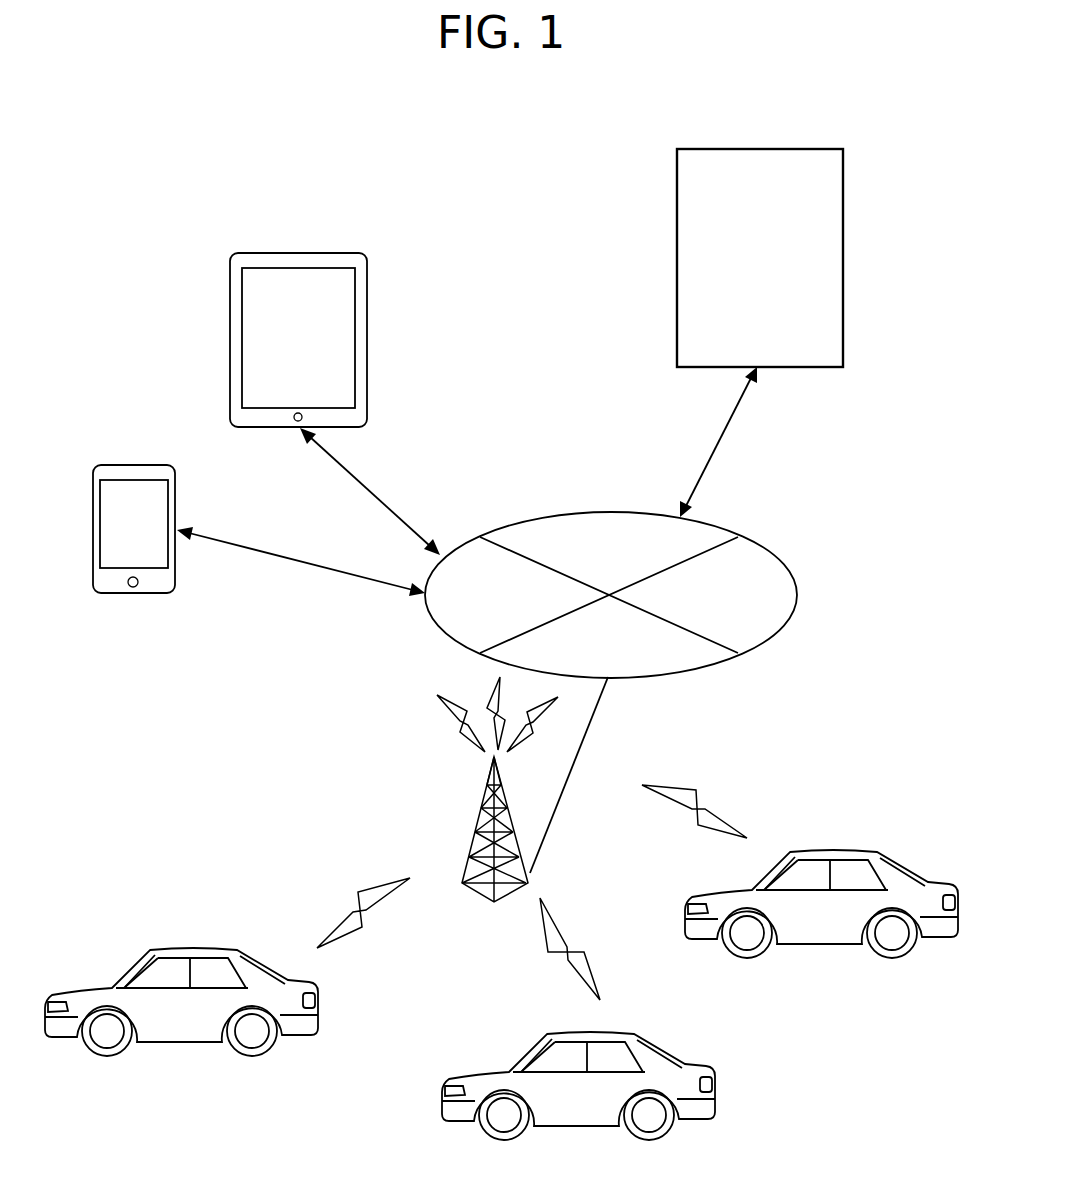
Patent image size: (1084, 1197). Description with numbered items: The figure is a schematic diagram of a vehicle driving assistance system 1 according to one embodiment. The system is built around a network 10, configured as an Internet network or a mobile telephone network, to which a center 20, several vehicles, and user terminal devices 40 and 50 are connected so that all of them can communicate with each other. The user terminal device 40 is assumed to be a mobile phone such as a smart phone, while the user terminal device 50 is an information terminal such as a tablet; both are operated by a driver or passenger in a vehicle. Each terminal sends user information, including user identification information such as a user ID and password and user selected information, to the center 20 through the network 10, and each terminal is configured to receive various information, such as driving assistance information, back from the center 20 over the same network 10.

The vehicle driving assistance system 1 is at (513, 172).
The network 10 is at (605, 512).
The center 20 is at (677, 250).
The user terminal device 40 is at (135, 465).
The user terminal device 50 is at (308, 253).